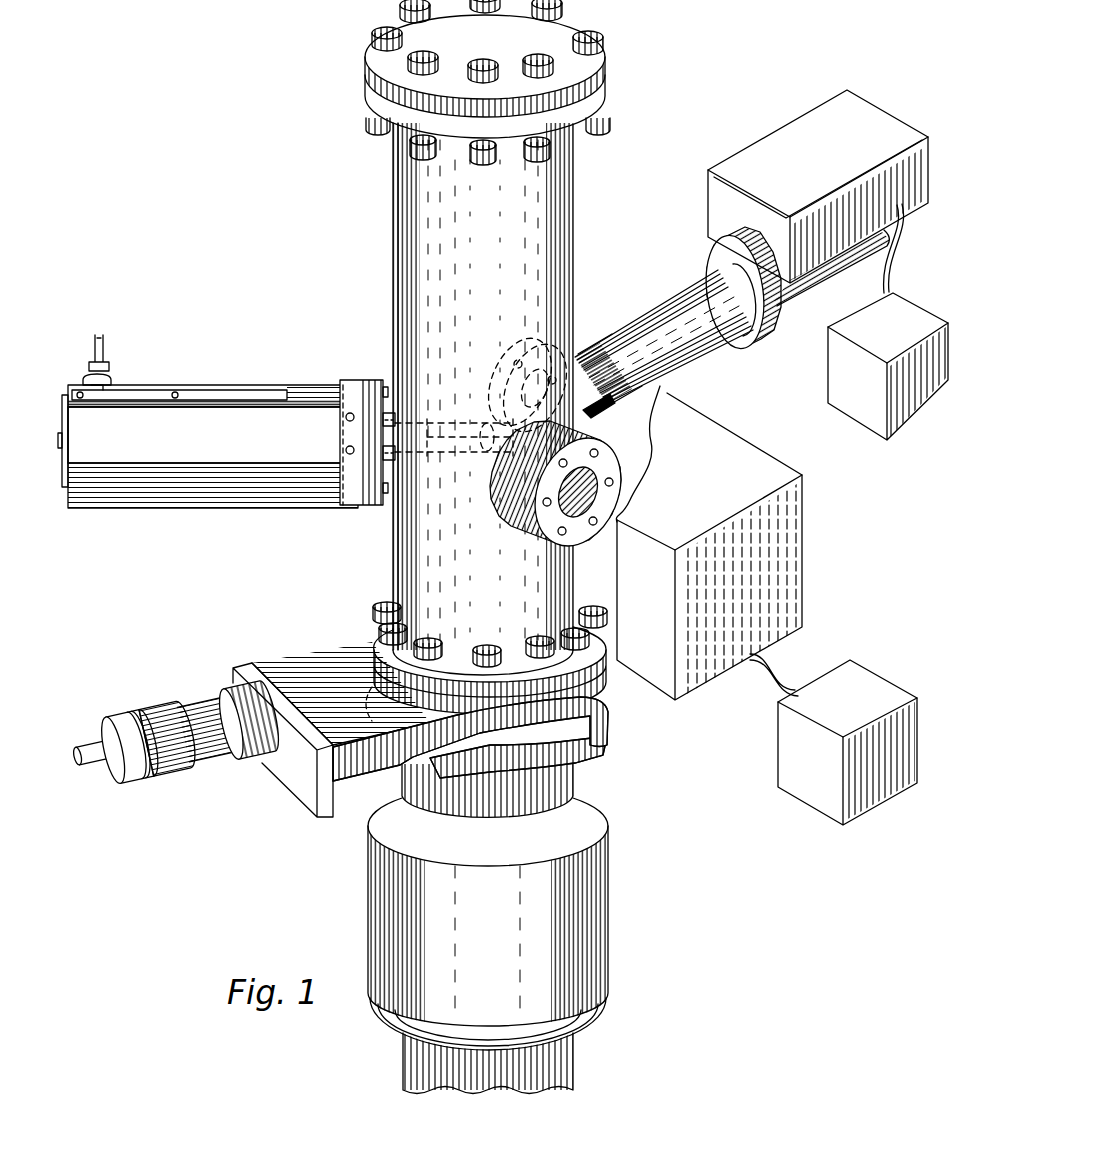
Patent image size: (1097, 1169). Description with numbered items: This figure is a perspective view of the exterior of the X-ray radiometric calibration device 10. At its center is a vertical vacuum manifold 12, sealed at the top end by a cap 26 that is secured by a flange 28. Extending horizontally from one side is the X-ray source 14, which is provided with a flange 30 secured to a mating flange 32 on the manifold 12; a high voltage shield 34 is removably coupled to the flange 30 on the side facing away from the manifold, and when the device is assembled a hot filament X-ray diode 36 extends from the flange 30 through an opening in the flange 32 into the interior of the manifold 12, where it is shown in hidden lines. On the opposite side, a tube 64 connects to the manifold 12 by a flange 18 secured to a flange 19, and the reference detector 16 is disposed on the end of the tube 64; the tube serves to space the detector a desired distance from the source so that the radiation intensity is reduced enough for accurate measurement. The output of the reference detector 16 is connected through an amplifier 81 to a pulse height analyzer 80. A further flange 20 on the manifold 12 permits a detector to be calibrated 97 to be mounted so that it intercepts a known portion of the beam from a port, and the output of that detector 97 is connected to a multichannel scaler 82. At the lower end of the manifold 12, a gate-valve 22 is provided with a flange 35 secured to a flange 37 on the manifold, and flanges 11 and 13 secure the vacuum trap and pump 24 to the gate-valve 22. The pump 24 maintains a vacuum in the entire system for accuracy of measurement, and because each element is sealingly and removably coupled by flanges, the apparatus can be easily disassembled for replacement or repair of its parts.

The X-ray radiometric calibration device 10 is at (234, 113).
The flange 11 is at (606, 705).
The vacuum manifold 12 is at (391, 252).
The flange 13 is at (606, 733).
The X-ray source 14 is at (226, 382).
The reference detector 16 is at (769, 132).
The flange 18 is at (608, 412).
The flange 19 is at (602, 429).
The flange 20 is at (630, 474).
The gate-valve 22 is at (291, 672).
The vacuum trap and pump 24 is at (588, 941).
The cap 26 is at (469, 58).
The flange 28 is at (604, 111).
The flange 30 is at (347, 381).
The flange 32 is at (370, 381).
The high voltage shield 34 is at (196, 451).
The flange 35 is at (347, 668).
The hot filament X-ray diode 36 is at (465, 418).
The flange 37 is at (372, 662).
The tube 64 is at (657, 318).
The pulse height analyzer 80 is at (910, 396).
The amplifier 81 is at (801, 166).
The multichannel scaler 82 is at (875, 773).
The detector to be calibrated 97 is at (809, 548).